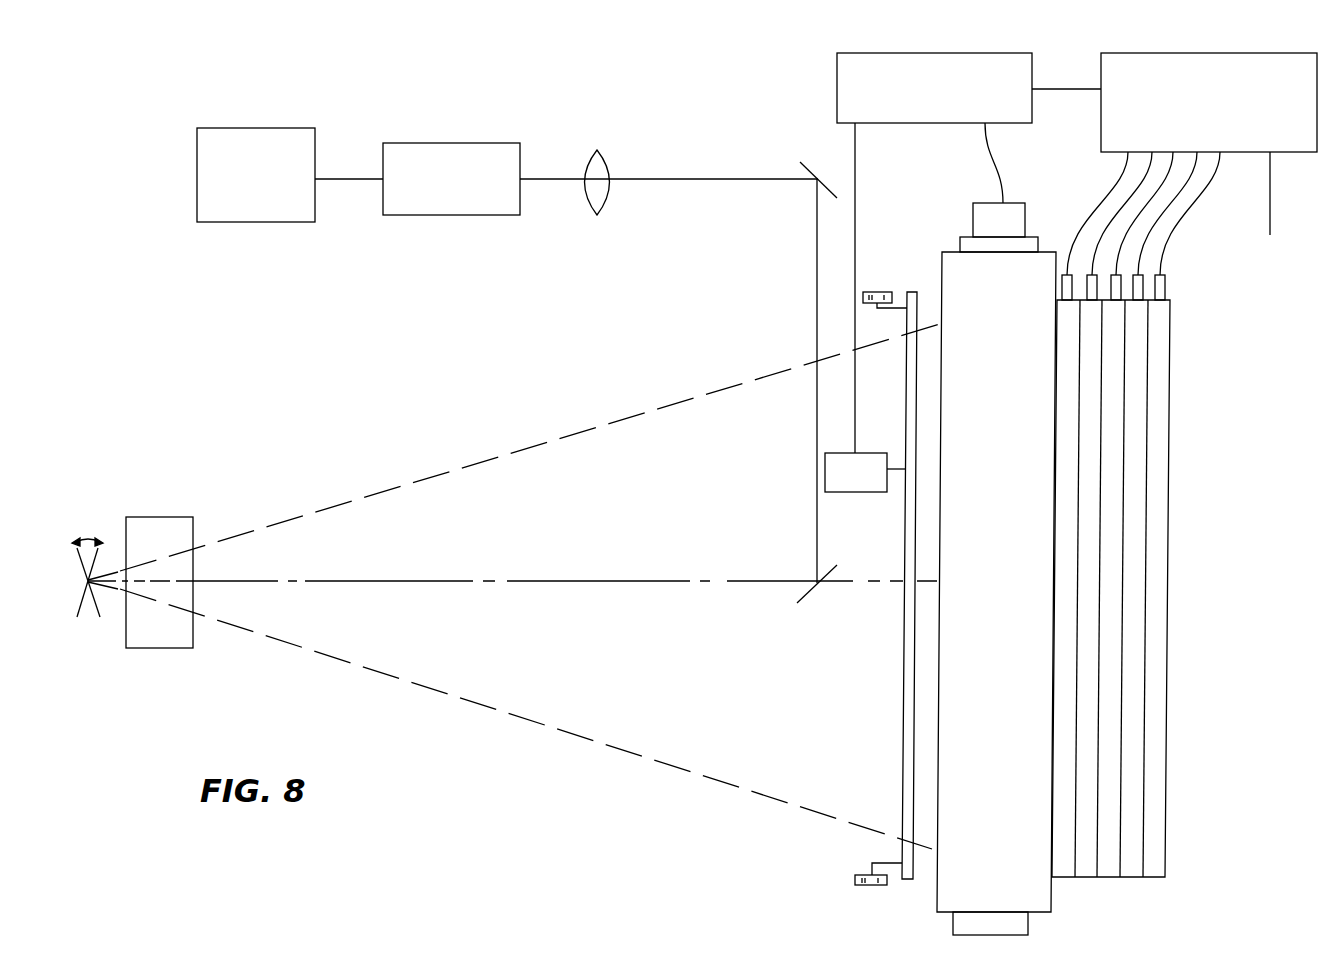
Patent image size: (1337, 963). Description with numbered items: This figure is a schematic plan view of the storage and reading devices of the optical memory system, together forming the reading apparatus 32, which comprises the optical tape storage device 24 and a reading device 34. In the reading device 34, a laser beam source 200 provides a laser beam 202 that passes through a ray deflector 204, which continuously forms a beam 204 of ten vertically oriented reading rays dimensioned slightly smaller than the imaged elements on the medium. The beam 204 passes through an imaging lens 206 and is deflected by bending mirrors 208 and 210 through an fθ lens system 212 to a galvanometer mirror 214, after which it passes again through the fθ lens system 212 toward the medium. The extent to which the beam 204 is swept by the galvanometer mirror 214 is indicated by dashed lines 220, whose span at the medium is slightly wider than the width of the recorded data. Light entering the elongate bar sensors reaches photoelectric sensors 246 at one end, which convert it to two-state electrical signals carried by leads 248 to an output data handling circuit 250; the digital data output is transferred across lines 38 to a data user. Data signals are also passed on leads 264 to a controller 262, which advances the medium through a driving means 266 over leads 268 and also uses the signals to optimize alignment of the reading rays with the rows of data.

The optical tape storage device 24 is at (1058, 900).
The reading apparatus 32 is at (312, 124).
The reading device 34 is at (717, 141).
The lines 38 is at (1270, 191).
The laser beam source 200 is at (270, 222).
The laser beam 202 is at (345, 180).
The ray deflector / beam 204 is at (464, 143).
The imaging lens 206 is at (605, 202).
The bending mirror 208 is at (829, 190).
The bending mirror 210 is at (808, 592).
The fθ lens system 212 is at (193, 529).
The galvanometer mirror 214 is at (77, 572).
The dashed lines 220 is at (545, 436).
The photoelectric sensors 246 is at (1142, 282).
The leads 248 is at (1118, 184).
The output data handling circuit 250 is at (1230, 52).
The controller 262 is at (932, 52).
The leads 264 is at (1080, 88).
The driving means 266 is at (973, 218).
The leads 268 is at (992, 160).